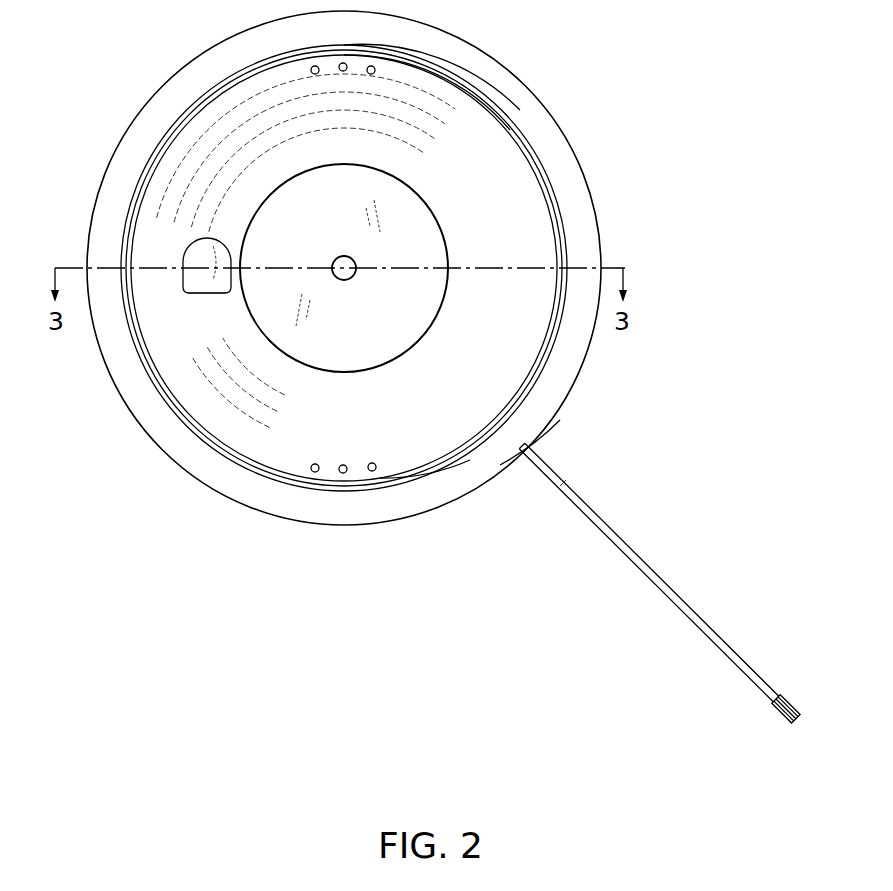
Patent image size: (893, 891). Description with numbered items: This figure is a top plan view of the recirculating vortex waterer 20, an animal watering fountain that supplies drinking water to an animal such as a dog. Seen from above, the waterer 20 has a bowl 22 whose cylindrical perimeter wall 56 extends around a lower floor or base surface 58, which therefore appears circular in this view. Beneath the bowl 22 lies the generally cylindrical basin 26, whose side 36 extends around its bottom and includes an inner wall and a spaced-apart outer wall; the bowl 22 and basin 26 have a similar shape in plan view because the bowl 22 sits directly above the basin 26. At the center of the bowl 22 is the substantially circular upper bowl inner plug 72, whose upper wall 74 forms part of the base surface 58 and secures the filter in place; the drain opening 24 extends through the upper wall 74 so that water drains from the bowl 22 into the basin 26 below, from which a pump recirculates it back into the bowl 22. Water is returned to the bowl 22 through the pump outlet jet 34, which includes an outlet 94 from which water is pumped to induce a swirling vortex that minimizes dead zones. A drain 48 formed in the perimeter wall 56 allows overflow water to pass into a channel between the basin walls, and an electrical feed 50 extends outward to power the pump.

The waterer 20 is at (616, 196).
The bowl 22 is at (572, 246).
The drain opening 24 is at (358, 283).
The basin 26 is at (556, 434).
The pump outlet jet 34 is at (200, 257).
The side 36 is at (427, 493).
The drain 48 is at (372, 472).
The electrical feed 50 is at (633, 547).
The perimeter wall 56 is at (487, 90).
The base surface 58 is at (515, 162).
The upper bowl inner plug 72 is at (270, 223).
The upper wall 74 is at (410, 300).
The outlet 94 is at (200, 293).